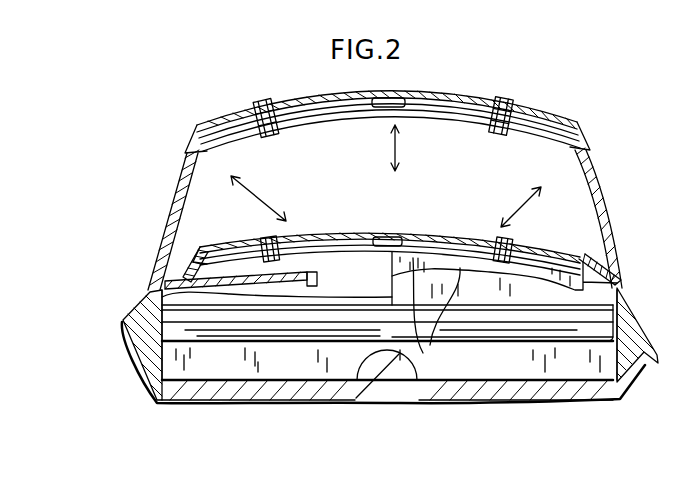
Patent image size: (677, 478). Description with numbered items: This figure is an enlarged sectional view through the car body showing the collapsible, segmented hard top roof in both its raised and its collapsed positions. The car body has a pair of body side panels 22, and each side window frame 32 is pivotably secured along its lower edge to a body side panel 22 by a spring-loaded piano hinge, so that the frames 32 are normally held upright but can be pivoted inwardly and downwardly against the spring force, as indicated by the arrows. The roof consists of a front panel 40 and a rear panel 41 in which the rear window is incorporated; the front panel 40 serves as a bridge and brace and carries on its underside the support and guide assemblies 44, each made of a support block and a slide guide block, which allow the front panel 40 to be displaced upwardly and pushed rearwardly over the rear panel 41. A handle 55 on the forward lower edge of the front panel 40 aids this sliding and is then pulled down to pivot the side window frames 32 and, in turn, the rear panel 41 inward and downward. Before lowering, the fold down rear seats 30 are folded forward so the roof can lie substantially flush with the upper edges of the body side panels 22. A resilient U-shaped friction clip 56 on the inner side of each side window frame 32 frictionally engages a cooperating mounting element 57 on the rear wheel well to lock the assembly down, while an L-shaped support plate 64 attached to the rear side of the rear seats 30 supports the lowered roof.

The body side panel 22 is at (128, 342).
The fold down rear seat 30 is at (291, 330).
The side window frame 32 is at (173, 207).
The front panel 40 is at (439, 98).
The rear panel 41 is at (445, 113).
The support and guide assembly 44 is at (262, 110).
The handle 55 is at (402, 105).
The friction clip 56 is at (186, 265).
The mounting element 57 is at (222, 283).
The support plate 64 is at (409, 328).